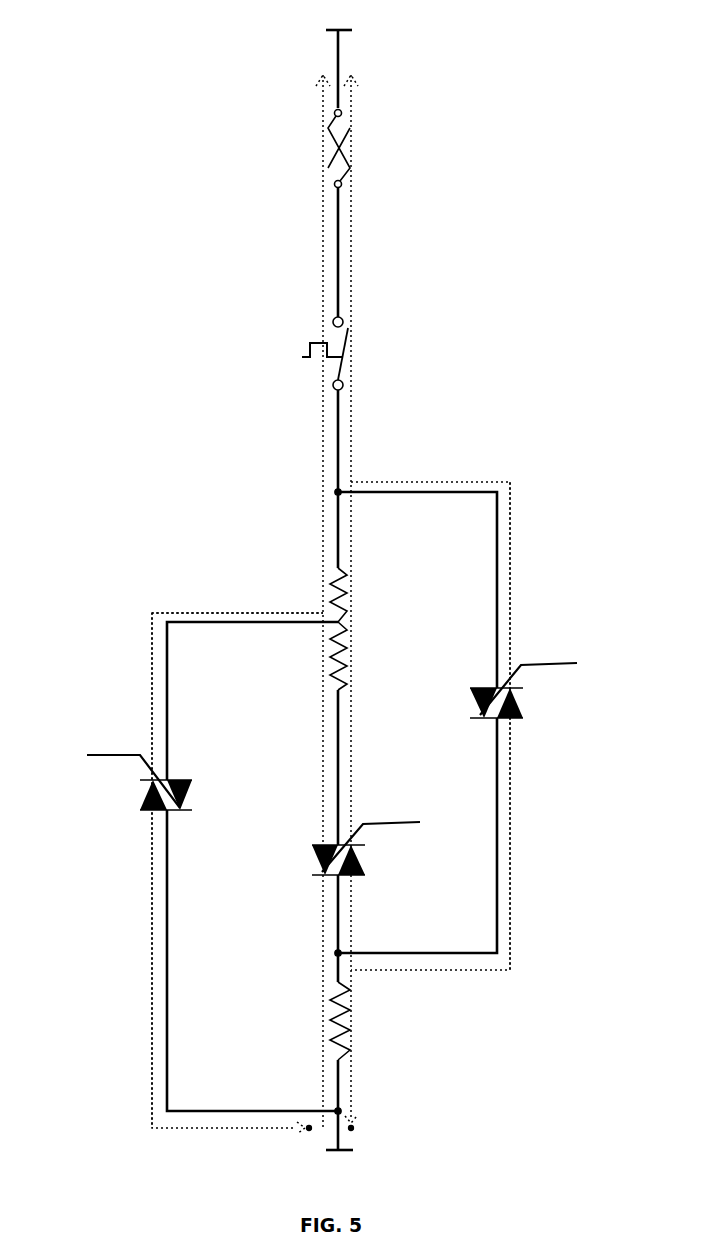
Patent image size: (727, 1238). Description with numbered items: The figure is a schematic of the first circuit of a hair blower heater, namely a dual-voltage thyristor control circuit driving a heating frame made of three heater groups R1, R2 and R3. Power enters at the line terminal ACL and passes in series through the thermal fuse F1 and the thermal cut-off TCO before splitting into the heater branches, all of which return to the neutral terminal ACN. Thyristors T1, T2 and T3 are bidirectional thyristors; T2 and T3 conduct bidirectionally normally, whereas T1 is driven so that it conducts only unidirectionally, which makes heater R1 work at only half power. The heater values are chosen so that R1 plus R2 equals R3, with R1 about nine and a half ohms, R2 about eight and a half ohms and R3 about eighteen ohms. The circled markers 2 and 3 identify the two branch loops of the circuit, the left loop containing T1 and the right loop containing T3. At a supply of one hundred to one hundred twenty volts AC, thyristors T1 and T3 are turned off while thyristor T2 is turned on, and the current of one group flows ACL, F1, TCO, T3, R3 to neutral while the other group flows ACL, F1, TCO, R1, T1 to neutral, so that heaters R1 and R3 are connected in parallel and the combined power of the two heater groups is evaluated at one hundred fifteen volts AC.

The thermal fuse F1 is at (249, 159).
The thermal cut-off TCO is at (292, 348).
The heater R1 is at (309, 593).
The heater R2 is at (309, 656).
The heater R3 is at (316, 1021).
The bidirectional thyristor T1 is at (187, 782).
The bidirectional thyristor T2 is at (328, 862).
The bidirectional thyristor T3 is at (539, 706).
The AC line terminal ACL is at (337, 17).
The AC neutral terminal ACN is at (339, 1164).
The second heating branch 2 is at (225, 870).
The third heating branch 3 is at (522, 726).